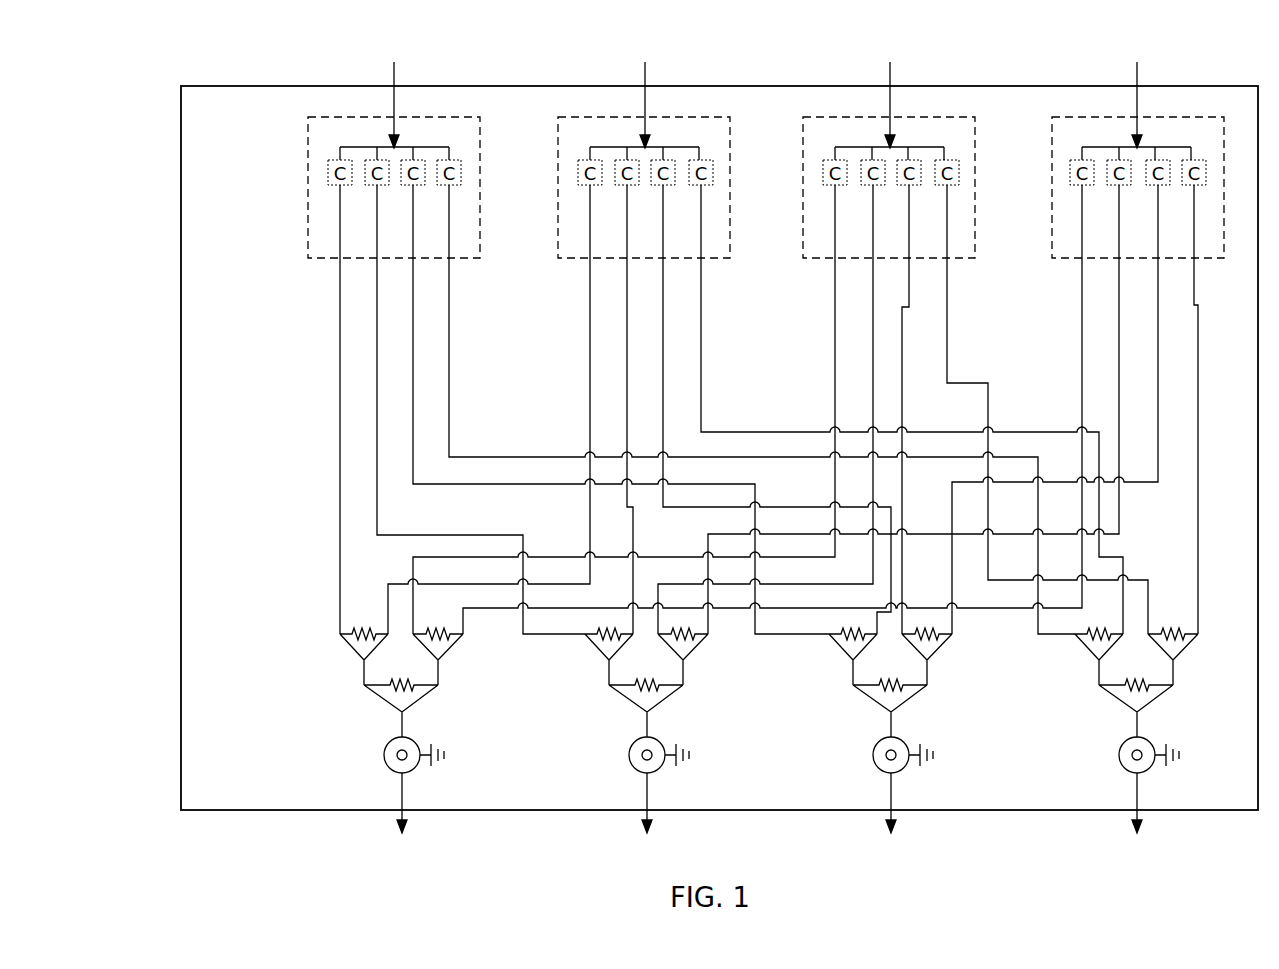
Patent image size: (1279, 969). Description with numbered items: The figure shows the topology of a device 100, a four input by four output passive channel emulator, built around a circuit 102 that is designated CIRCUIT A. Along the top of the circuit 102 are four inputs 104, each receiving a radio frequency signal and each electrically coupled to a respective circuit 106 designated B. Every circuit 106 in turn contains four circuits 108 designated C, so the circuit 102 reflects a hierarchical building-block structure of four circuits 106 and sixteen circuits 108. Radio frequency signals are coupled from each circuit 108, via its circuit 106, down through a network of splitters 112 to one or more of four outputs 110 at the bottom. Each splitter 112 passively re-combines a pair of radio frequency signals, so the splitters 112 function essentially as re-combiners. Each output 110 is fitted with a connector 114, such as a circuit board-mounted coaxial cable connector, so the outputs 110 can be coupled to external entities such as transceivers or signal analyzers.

The device 100 is at (984, 28).
The circuit 102 is at (221, 86).
The input 104 is at (394, 80).
The circuit 106 is at (480, 244).
The circuit 108 is at (334, 160).
The output 110 is at (402, 798).
The splitter 112 is at (340, 658).
The connector 114 is at (385, 750).